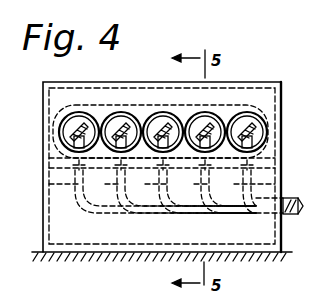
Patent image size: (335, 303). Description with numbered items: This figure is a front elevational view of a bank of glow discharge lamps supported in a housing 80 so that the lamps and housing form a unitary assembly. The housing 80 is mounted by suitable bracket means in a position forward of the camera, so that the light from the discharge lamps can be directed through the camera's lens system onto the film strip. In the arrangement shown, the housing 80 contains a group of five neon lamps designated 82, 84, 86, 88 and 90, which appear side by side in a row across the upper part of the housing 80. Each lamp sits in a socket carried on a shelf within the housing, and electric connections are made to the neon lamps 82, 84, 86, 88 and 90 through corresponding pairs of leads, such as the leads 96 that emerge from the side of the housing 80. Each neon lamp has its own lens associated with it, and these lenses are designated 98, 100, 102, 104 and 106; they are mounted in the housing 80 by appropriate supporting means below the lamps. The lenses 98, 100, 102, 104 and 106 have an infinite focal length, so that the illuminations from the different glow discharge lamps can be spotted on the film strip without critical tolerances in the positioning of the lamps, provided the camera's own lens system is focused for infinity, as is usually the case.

The housing 80 is at (287, 150).
The neon lamp 82 is at (50, 148).
The neon lamp 84 is at (97, 172).
The neon lamp 86 is at (138, 172).
The neon lamp 88 is at (178, 173).
The neon lamp 90 is at (222, 172).
The leads 96 is at (292, 198).
The lens 98 is at (50, 152).
The lens 100 is at (164, 186).
The lens 102 is at (185, 186).
The lens 104 is at (206, 186).
The lens 106 is at (227, 186).